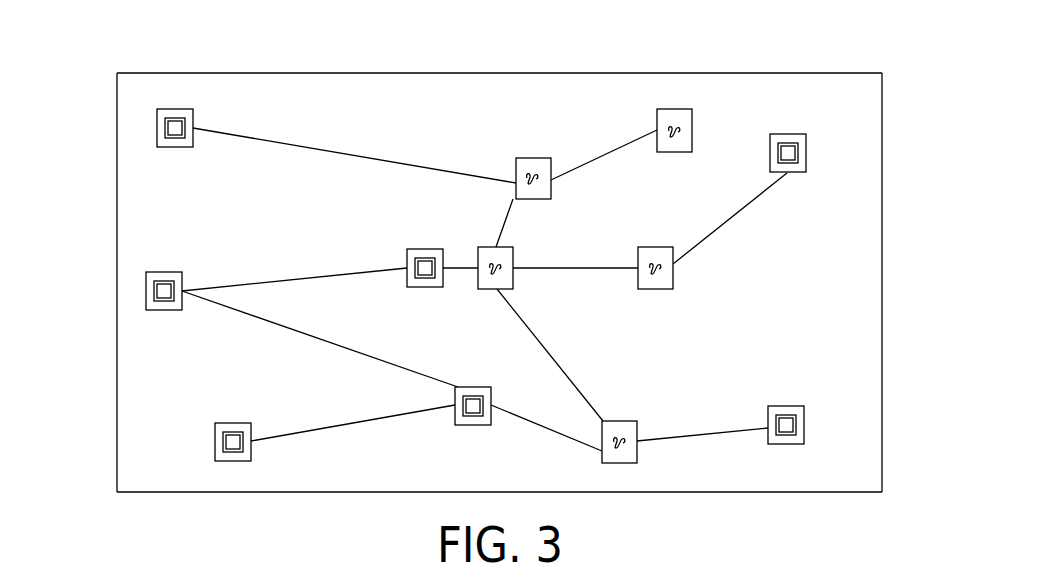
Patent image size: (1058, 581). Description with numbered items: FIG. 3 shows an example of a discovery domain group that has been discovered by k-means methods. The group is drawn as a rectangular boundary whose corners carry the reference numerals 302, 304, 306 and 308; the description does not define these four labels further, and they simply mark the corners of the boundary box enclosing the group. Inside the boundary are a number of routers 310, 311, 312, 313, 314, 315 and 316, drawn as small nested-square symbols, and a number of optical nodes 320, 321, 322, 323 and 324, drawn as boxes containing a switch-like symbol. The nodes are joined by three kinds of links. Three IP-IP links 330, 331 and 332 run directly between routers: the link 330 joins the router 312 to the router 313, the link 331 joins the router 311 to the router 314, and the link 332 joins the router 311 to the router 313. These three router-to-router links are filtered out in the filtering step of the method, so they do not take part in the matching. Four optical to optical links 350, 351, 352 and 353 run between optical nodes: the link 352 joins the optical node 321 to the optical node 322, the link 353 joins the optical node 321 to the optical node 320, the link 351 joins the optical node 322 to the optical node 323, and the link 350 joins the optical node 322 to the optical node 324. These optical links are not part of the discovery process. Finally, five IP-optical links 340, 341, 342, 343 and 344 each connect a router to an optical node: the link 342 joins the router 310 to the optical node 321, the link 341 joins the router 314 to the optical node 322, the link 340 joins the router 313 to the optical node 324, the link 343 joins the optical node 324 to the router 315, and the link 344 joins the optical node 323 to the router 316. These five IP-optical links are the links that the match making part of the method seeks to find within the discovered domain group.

The right edge of monitored region 302 is at (882, 492).
The top edge of monitored region 304 is at (882, 73).
The left edge of monitored region 306 is at (117, 73).
The bottom edge of monitored region 308 is at (117, 492).
The router 310 is at (193, 127).
The router 311 is at (163, 272).
The router 312 is at (215, 430).
The router 313 is at (462, 425).
The router 314 is at (407, 252).
The router 315 is at (790, 406).
The router 316 is at (806, 158).
The optical node 320 is at (692, 118).
The optical node 321 is at (530, 158).
The optical node 322 is at (483, 290).
The optical node 323 is at (673, 284).
The optical node 324 is at (618, 421).
The IP-IP link 330 is at (330, 428).
The IP-IP link 331 is at (252, 280).
The IP-IP link 332 is at (260, 320).
The IP-optical link 340 is at (532, 427).
The IP-optical link 341 is at (460, 265).
The IP-optical link 342 is at (313, 148).
The IP-optical link 343 is at (710, 435).
The IP-optical link 344 is at (747, 213).
The optical to optical link 350 is at (543, 343).
The optical to optical link 351 is at (607, 265).
The optical to optical link 352 is at (507, 220).
The optical to optical link 353 is at (610, 152).